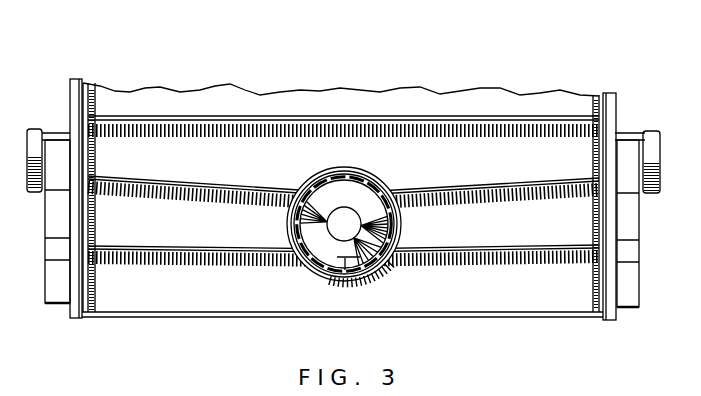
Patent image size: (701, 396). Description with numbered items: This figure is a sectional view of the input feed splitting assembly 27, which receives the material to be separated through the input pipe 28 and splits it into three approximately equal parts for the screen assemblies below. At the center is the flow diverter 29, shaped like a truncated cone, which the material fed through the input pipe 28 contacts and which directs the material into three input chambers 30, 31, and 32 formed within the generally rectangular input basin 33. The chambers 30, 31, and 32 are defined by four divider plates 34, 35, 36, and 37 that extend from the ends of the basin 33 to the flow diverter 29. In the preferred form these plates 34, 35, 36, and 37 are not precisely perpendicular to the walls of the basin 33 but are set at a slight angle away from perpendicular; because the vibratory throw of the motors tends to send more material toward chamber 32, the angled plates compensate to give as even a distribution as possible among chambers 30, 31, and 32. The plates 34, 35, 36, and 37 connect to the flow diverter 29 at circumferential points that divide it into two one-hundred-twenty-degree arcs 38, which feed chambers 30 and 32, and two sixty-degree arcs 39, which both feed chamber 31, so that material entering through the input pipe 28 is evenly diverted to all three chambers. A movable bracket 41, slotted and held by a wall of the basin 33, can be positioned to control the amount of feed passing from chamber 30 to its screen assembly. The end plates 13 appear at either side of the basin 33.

The end plate 13 is at (75, 100).
The input feed splitting assembly 27 is at (303, 77).
The input pipe 28 is at (340, 175).
The flow diverter 29 is at (393, 267).
The input chamber 30 is at (181, 150).
The input chamber 31 is at (187, 220).
The input chamber 32 is at (189, 280).
The input basin 33 is at (185, 320).
The divider plate 34 is at (522, 185).
The divider plate 35 is at (552, 252).
The divider plate 36 is at (123, 252).
The divider plate 37 is at (123, 177).
The 120° arc 38 is at (365, 172).
The 60° arc 39 is at (403, 227).
The movable bracket 41 is at (475, 132).